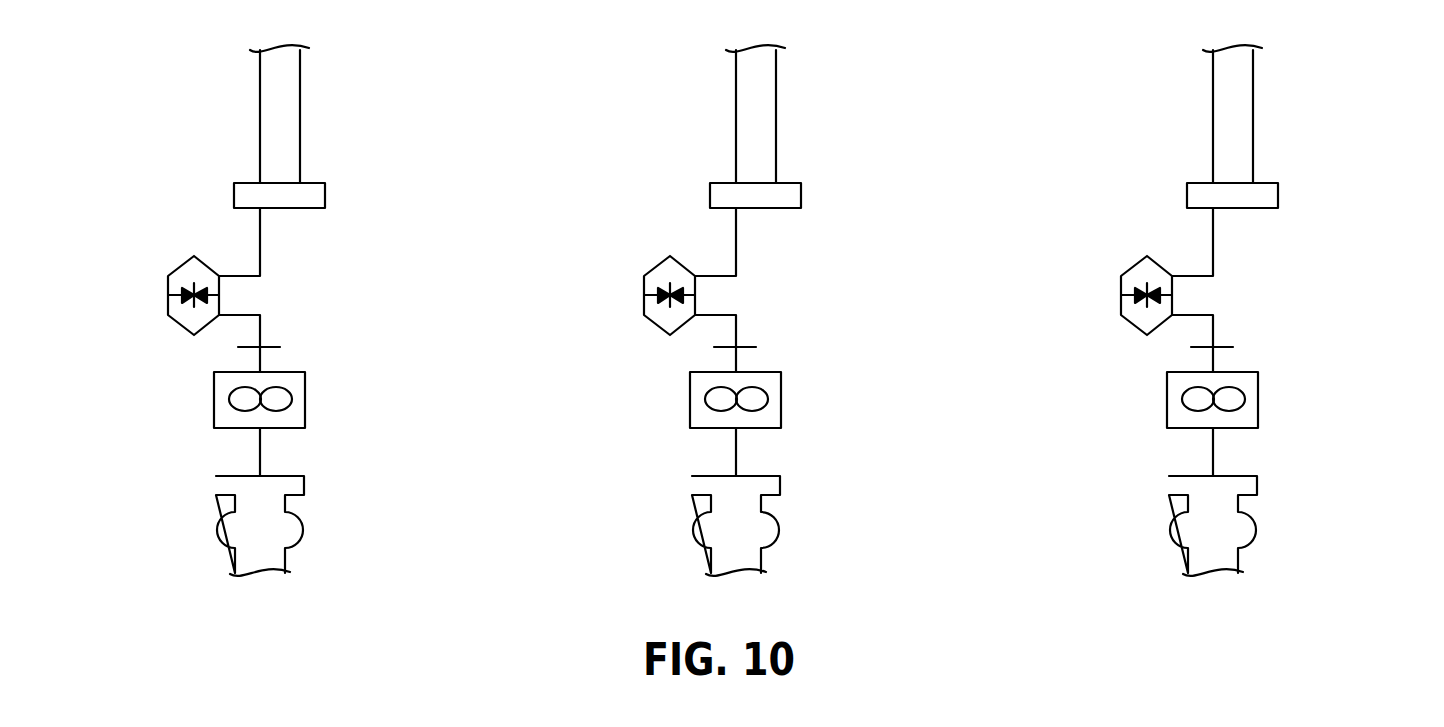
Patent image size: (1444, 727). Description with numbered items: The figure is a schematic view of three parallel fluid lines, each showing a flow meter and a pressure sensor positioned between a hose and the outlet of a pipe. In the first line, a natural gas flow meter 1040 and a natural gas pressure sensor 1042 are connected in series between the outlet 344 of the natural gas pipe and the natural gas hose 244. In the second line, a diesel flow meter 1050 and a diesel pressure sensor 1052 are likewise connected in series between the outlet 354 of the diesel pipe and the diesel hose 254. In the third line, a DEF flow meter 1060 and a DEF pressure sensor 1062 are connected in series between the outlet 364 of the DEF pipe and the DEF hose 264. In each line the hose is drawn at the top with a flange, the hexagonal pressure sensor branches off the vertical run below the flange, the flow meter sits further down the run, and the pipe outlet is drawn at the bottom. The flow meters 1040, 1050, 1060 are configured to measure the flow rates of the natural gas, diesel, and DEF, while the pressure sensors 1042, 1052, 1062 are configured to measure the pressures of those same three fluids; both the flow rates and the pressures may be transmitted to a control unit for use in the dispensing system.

The natural gas hose 244 is at (303, 124).
The diesel hose 254 is at (774, 126).
The DEF hose 264 is at (1251, 126).
The natural gas pressure sensor 1042 is at (185, 264).
The diesel pressure sensor 1052 is at (642, 290).
The DEF pressure sensor 1062 is at (1119, 290).
The natural gas flow meter 1040 is at (305, 399).
The diesel flow meter 1050 is at (815, 424).
The DEF flow meter 1060 is at (1292, 424).
The outlet of the natural gas pipe 344 is at (303, 529).
The outlet of the diesel pipe 354 is at (766, 526).
The outlet of the DEF pipe 364 is at (1243, 526).